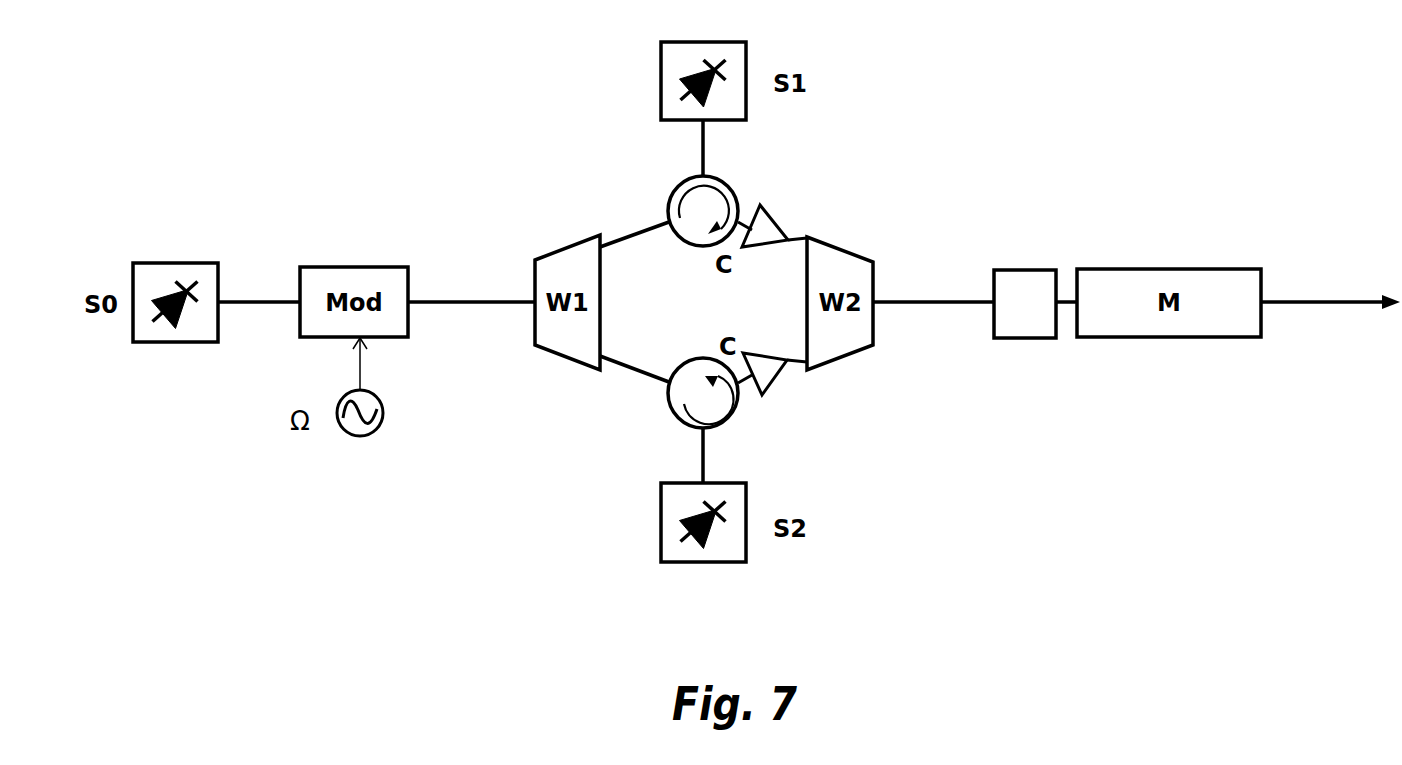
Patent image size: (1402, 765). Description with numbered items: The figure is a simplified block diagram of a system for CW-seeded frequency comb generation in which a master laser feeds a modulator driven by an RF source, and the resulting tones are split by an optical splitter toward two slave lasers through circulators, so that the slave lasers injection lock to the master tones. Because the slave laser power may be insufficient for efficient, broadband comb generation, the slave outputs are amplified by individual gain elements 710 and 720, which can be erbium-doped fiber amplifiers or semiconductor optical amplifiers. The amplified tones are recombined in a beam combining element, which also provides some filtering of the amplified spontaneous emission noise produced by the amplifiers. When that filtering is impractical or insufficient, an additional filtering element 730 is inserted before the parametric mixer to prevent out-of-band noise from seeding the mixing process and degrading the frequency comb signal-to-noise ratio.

The gain element 710 is at (760, 205).
The gain element 720 is at (762, 395).
The filtering element 730 is at (1018, 270).